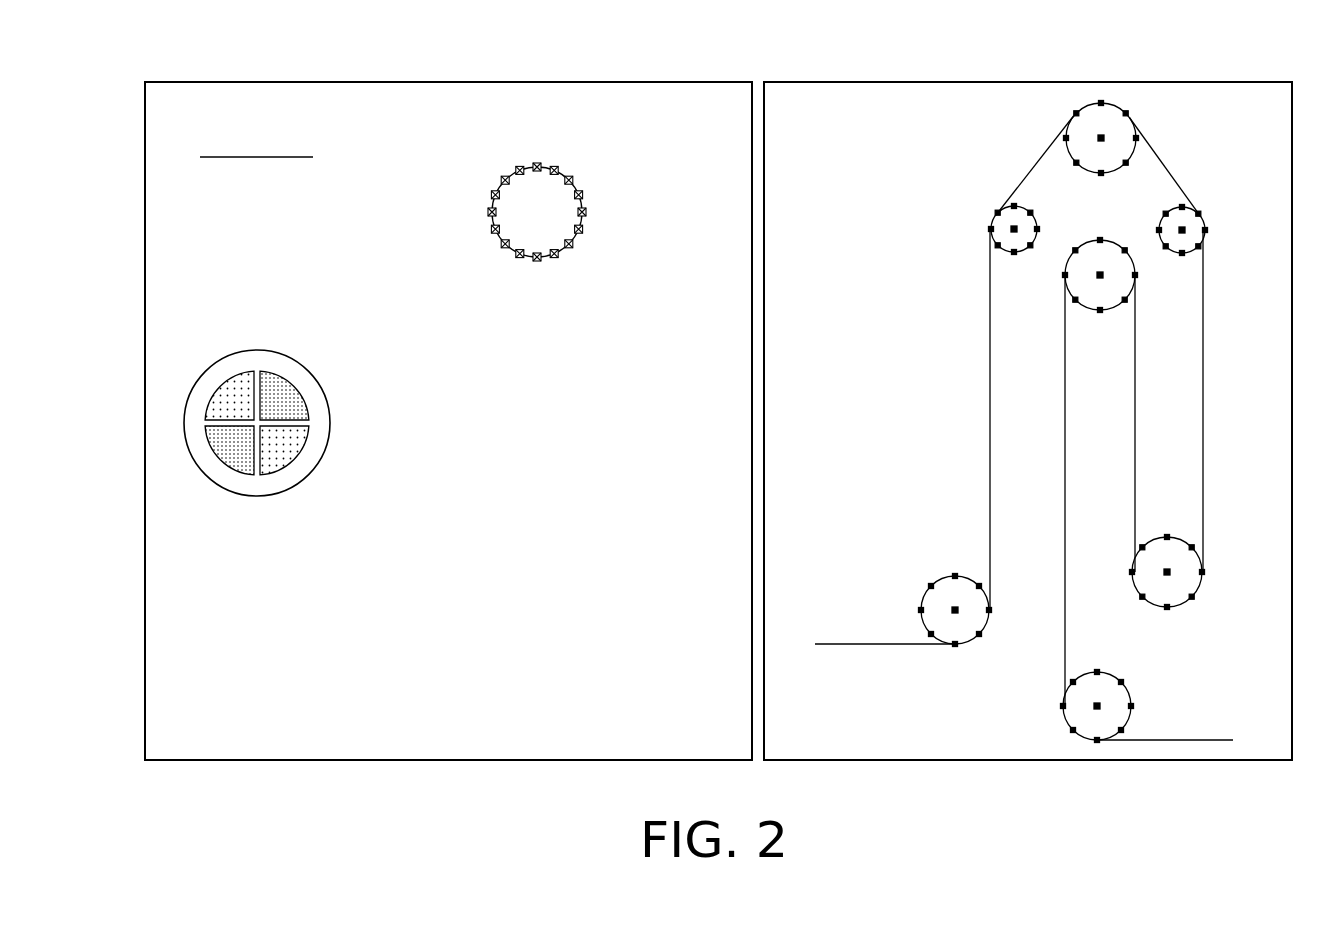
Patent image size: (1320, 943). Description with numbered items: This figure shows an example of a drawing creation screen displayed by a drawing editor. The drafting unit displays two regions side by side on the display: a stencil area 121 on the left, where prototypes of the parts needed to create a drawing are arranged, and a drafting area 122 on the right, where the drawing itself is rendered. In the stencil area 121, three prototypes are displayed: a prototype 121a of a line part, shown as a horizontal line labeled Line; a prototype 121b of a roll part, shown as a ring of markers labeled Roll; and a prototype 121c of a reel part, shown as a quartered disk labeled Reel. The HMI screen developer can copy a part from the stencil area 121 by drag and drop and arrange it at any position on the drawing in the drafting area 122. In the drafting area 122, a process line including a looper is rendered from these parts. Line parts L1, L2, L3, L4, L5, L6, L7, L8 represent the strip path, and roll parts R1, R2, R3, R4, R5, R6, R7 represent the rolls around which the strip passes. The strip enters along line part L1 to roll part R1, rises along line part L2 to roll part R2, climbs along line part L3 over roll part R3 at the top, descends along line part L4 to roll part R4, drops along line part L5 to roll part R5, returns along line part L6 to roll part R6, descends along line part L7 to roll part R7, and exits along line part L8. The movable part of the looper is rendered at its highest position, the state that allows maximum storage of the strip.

The stencil area 121 is at (215, 82).
The prototype of a line part 121a is at (232, 157).
The prototype of a roll part 121b is at (578, 205).
The prototype of a reel part 121c is at (228, 352).
The drafting area 122 is at (822, 82).
The roll part R1 is at (928, 592).
The roll part R2 is at (1037, 227).
The roll part R3 is at (1108, 172).
The roll part R4 is at (1207, 223).
The roll part R5 is at (1198, 588).
The roll part R6 is at (1065, 265).
The roll part R7 is at (1063, 717).
The line part L1 is at (870, 644).
The line part L2 is at (990, 388).
The line part L3 is at (1033, 168).
The line part L4 is at (1163, 160).
The line part L5 is at (1203, 345).
The line part L6 is at (1135, 388).
The line part L7 is at (1065, 388).
The line part L8 is at (1168, 740).